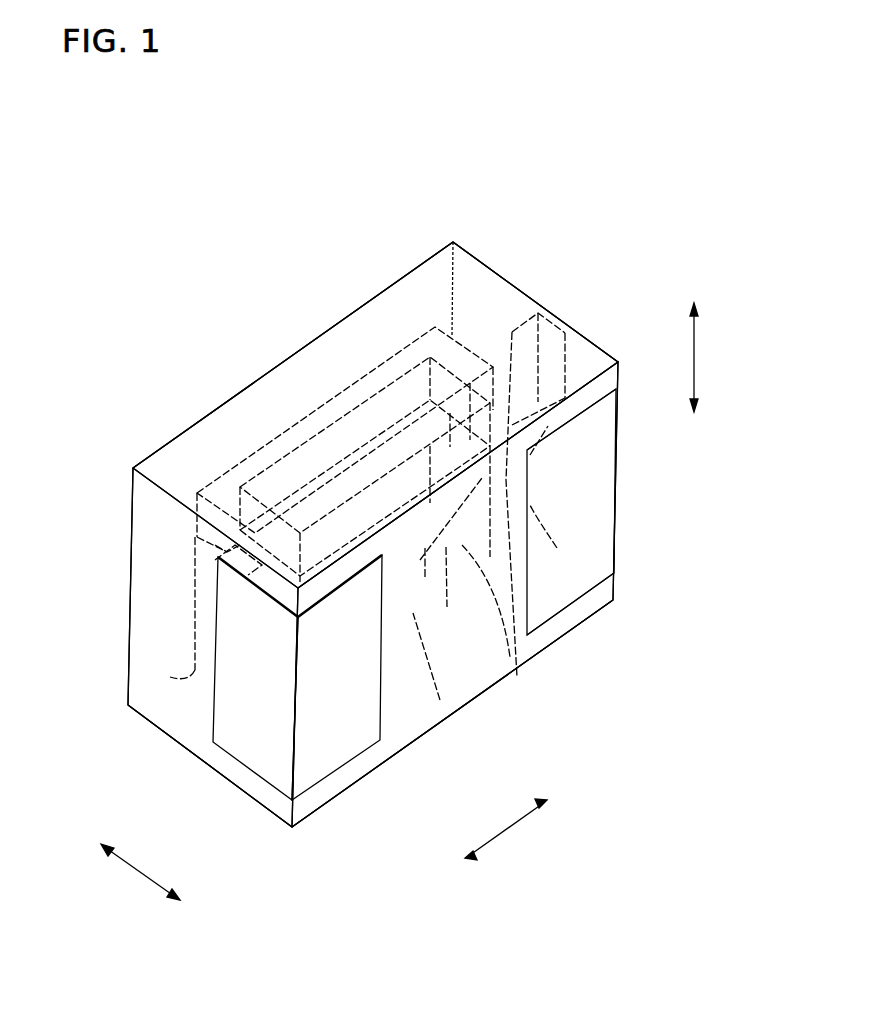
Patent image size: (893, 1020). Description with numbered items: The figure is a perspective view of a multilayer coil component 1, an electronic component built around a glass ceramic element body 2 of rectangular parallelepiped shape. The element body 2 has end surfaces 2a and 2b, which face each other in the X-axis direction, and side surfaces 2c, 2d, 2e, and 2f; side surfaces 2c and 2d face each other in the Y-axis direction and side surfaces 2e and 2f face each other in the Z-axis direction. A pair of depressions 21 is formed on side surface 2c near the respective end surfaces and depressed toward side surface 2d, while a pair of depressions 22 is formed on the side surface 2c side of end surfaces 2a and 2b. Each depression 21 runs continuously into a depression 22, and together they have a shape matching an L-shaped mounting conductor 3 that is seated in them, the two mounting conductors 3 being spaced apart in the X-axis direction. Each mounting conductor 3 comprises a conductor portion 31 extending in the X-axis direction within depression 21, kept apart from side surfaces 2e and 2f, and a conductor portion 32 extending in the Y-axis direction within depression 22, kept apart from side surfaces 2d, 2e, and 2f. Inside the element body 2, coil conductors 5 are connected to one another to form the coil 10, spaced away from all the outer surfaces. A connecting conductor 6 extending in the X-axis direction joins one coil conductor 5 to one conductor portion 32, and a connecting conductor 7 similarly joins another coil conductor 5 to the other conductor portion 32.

The multilayer coil component 1 is at (503, 222).
The glass ceramic element body 2 is at (412, 262).
The end surface 2a is at (167, 717).
The end surface 2b is at (510, 310).
The side surface 2c is at (465, 670).
The side surface 2d is at (263, 410).
The side surface 2e is at (175, 462).
The side surface 2f is at (412, 745).
The mounting conductor 3 is at (700, 448).
The conductor portion 31 is at (598, 538).
The conductor portion 32 is at (598, 452).
The coil conductor 5 is at (193, 518).
The connecting conductor 6 is at (557, 548).
The connecting conductor 7 is at (227, 552).
The coil 10 is at (345, 386).
The depression 21 is at (548, 426).
The depression 22 is at (546, 367).